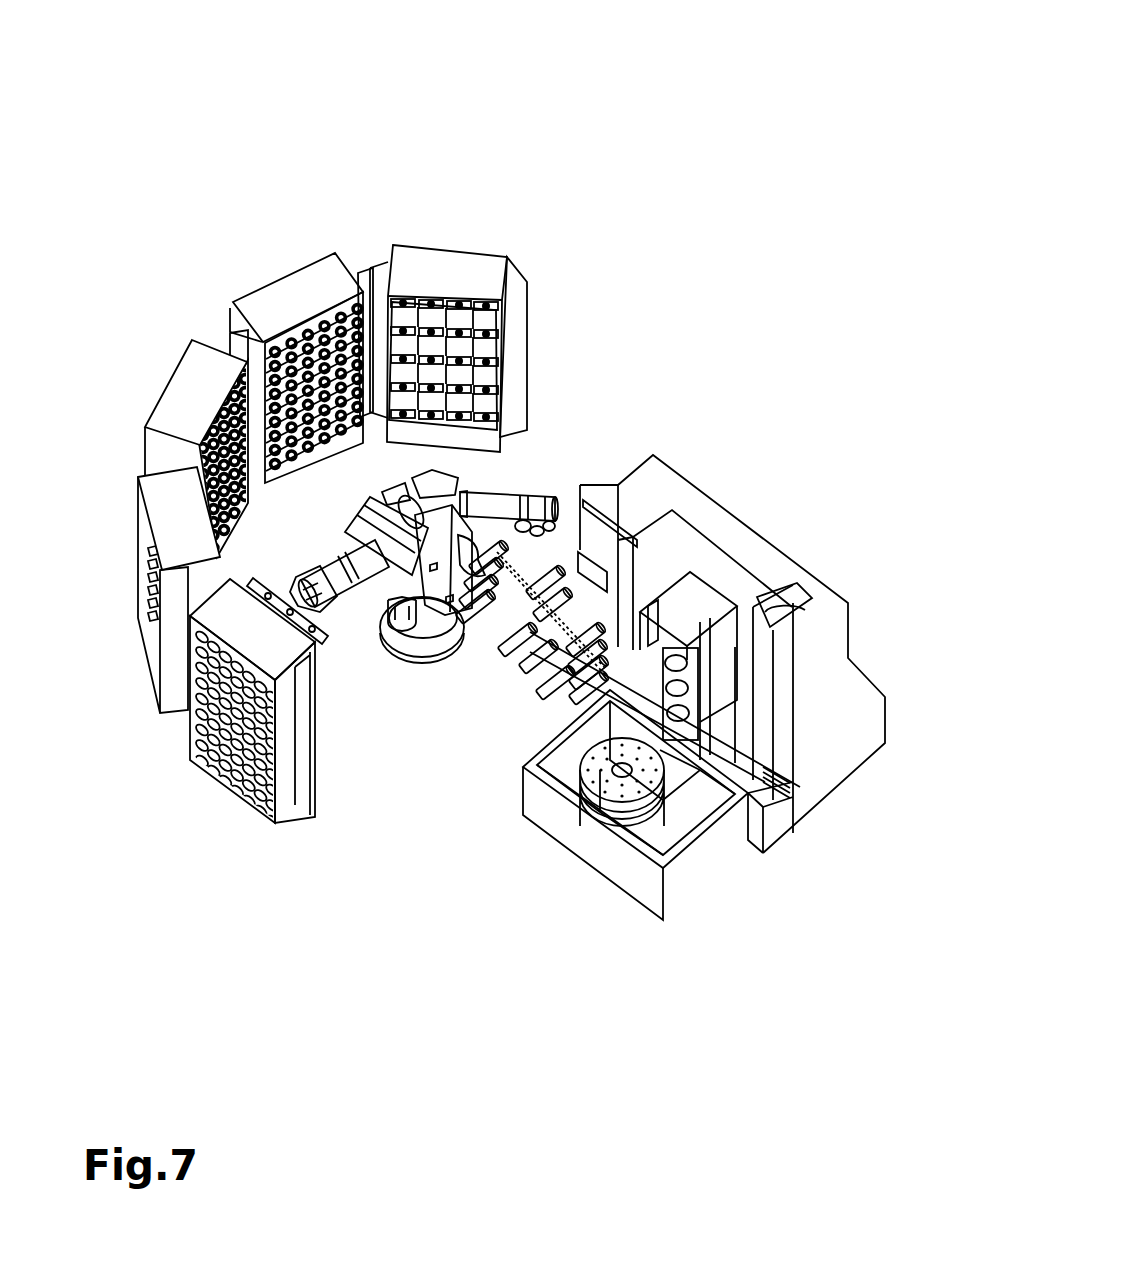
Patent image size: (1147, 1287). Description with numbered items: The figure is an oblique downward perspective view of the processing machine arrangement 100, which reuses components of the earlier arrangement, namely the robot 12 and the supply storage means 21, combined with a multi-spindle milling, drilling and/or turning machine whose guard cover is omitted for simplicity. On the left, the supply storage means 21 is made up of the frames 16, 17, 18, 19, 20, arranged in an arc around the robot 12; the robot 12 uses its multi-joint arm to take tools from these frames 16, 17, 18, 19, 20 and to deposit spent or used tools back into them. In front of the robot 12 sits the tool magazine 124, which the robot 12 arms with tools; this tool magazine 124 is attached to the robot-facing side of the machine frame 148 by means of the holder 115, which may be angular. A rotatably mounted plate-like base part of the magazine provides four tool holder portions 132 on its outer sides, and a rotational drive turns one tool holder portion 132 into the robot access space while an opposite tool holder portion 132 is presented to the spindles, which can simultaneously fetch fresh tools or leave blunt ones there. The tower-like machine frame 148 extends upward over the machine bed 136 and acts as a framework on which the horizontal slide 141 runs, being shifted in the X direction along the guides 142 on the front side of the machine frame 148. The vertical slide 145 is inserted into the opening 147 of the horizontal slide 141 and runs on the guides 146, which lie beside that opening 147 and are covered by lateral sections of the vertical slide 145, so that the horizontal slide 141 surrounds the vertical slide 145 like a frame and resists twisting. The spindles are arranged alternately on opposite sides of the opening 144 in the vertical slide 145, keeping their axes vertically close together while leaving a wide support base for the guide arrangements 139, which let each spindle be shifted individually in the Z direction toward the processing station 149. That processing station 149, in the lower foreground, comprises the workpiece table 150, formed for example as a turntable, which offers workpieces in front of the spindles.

The processing machine arrangement 100 is at (796, 198).
The robot 12 is at (316, 545).
The frame 16 is at (270, 828).
The frame 17 is at (165, 705).
The frame 18 is at (170, 413).
The frame 19 is at (282, 303).
The frame 20 is at (455, 263).
The supply storage means 21 is at (577, 381).
The holder 115 is at (557, 557).
The tool magazine 124 is at (463, 685).
The tool holder portion 132 is at (580, 672).
The machine bed 136 is at (782, 828).
The guide arrangement 139 is at (733, 713).
The horizontal slide 141 is at (767, 587).
The guide 142 is at (813, 648).
The opening 144 is at (672, 653).
The vertical slide 145 is at (735, 704).
The guide 146 is at (652, 603).
The opening 147 is at (720, 647).
The machine frame 148 is at (752, 530).
The processing station 149 is at (715, 896).
The workpiece table 150 is at (588, 790).